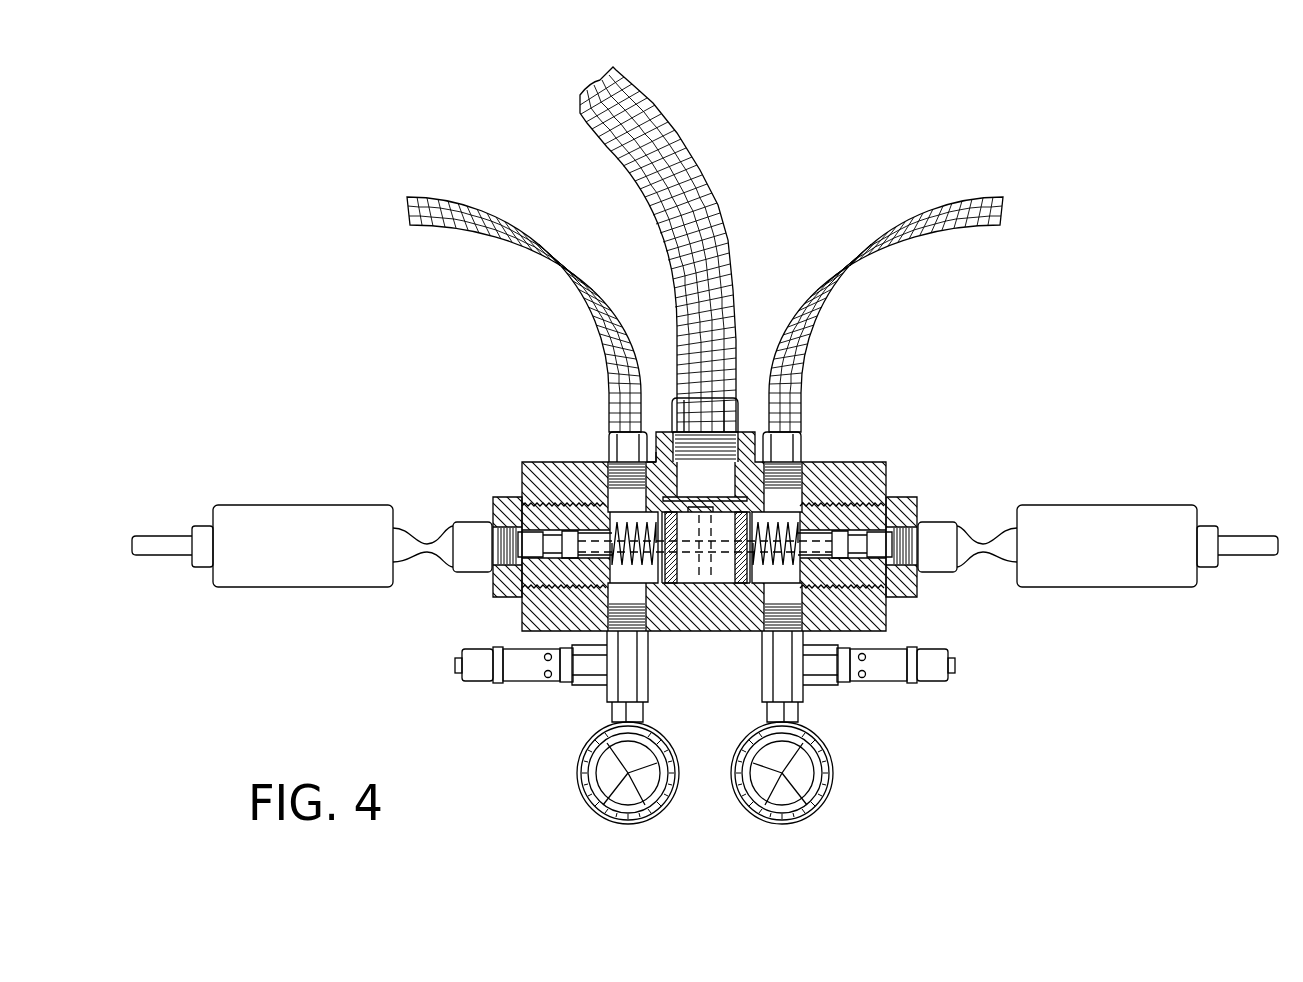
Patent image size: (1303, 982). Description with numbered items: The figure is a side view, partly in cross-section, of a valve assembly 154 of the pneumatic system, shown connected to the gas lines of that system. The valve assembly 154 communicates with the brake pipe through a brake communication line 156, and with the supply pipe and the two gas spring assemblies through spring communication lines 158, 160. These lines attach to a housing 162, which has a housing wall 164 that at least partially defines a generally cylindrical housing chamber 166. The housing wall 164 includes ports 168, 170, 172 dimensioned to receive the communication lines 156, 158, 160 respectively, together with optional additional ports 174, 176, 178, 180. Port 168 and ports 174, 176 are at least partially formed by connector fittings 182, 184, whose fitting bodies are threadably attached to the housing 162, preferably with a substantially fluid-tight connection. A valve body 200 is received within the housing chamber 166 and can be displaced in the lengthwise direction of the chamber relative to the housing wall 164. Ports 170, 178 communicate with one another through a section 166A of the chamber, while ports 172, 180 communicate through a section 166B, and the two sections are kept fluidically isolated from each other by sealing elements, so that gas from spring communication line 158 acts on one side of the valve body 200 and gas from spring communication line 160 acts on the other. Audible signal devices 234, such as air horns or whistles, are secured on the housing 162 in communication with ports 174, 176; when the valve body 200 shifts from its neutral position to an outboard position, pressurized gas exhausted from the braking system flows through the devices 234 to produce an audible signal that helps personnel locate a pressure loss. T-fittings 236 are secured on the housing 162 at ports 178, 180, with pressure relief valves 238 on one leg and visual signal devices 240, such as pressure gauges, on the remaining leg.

The valve assembly 154 is at (992, 390).
The brake communication line 156 is at (643, 88).
The spring communication line 158 is at (443, 197).
The spring communication line 160 is at (932, 198).
The housing 162 is at (532, 459).
The housing wall 164 is at (867, 461).
The housing chamber 166 is at (634, 580).
The section of the housing chamber 166A is at (612, 458).
The section of the housing chamber 166B is at (790, 460).
The port 168 is at (711, 434).
The port 170 is at (610, 456).
The port 172 is at (791, 448).
The port 174 is at (497, 538).
The port 176 is at (920, 543).
The port 178 is at (606, 617).
The port 180 is at (805, 617).
The connector fitting 182 is at (659, 421).
The connector fitting 184 is at (496, 495).
The valve body 200 is at (716, 574).
The audible signal device 234 is at (297, 511).
The T-fitting 236 is at (597, 688).
The pressure relief valve 238 is at (480, 686).
The visual signal device 240 is at (573, 800).